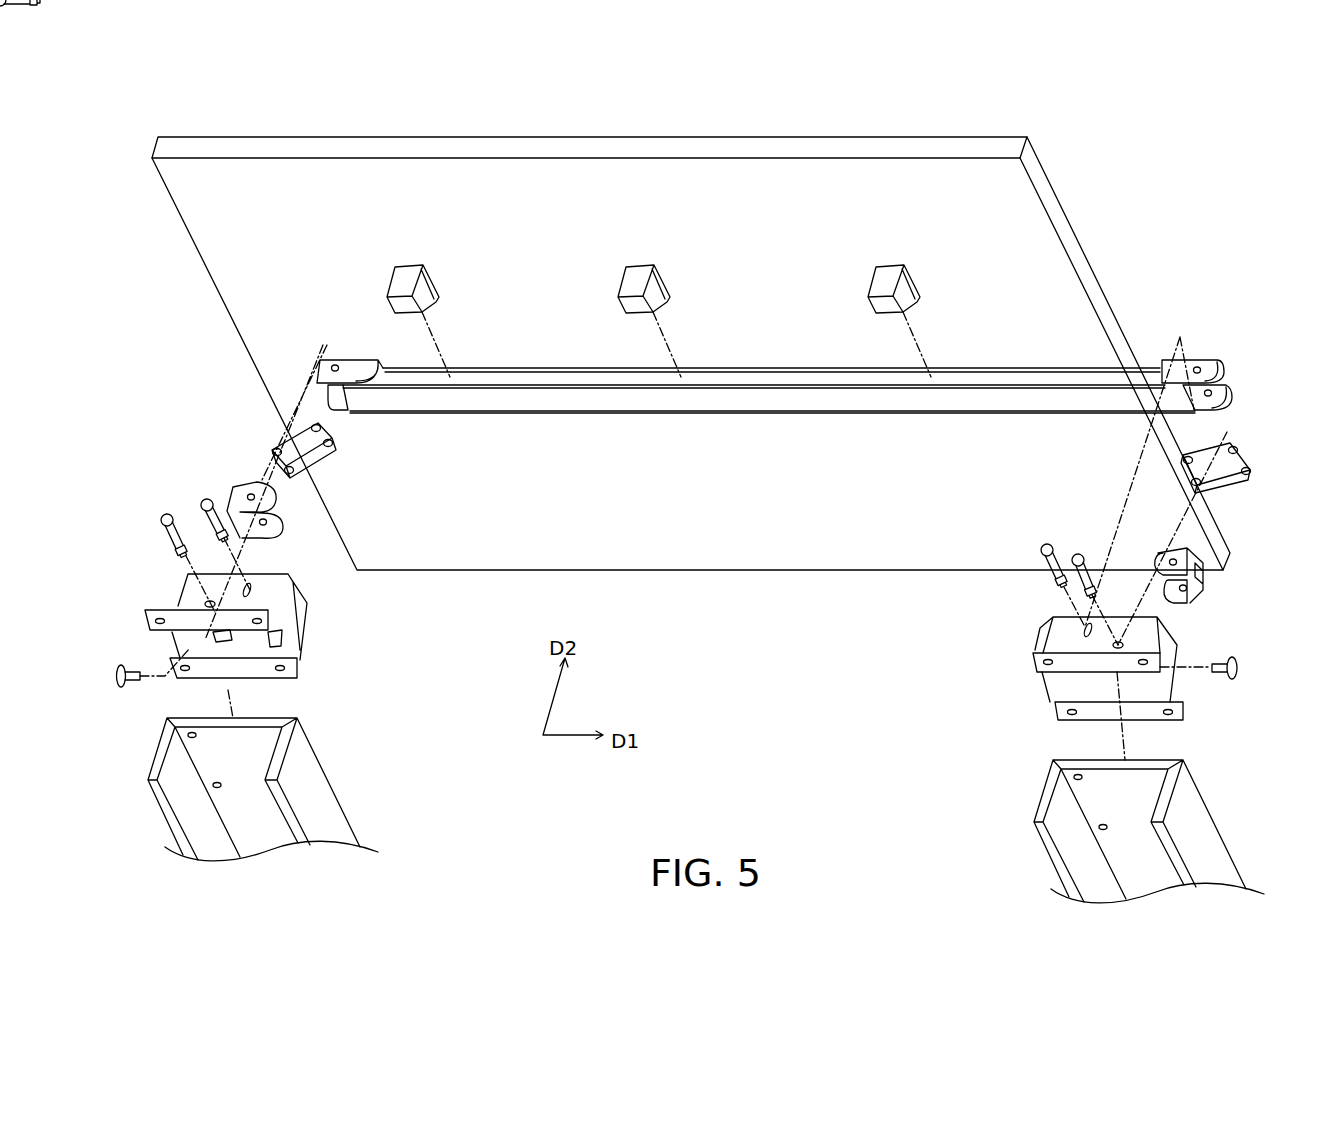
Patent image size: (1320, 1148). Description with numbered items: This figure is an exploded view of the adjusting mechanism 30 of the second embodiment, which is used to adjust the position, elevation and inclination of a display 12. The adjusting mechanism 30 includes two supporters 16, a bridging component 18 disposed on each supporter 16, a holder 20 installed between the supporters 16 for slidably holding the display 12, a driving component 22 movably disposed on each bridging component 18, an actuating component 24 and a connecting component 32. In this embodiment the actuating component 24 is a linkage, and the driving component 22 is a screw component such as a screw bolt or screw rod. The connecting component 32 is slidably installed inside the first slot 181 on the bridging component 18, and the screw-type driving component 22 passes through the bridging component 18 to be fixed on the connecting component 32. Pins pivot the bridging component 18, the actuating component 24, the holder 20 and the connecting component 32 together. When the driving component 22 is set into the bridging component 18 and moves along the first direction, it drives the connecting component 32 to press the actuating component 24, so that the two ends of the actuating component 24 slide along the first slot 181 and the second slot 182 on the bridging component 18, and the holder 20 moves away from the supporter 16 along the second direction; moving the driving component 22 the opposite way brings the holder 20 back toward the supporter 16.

The display 12 is at (1078, 255).
The supporter 16 is at (323, 792).
The bridging component 18 is at (300, 647).
The first slot 181 is at (228, 640).
The second slot 182 is at (279, 635).
The holder 20 is at (702, 405).
The driving component 22 is at (127, 687).
The actuating component 24 is at (300, 467).
The adjusting mechanism 30 is at (1205, 332).
The connecting component 32 is at (252, 480).